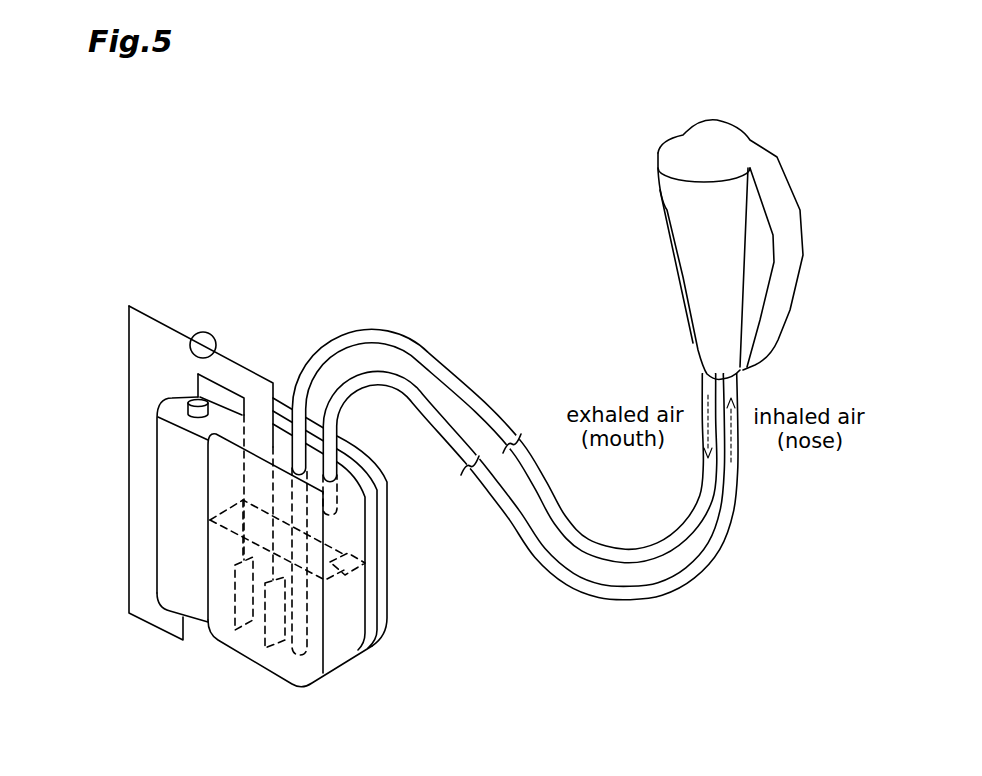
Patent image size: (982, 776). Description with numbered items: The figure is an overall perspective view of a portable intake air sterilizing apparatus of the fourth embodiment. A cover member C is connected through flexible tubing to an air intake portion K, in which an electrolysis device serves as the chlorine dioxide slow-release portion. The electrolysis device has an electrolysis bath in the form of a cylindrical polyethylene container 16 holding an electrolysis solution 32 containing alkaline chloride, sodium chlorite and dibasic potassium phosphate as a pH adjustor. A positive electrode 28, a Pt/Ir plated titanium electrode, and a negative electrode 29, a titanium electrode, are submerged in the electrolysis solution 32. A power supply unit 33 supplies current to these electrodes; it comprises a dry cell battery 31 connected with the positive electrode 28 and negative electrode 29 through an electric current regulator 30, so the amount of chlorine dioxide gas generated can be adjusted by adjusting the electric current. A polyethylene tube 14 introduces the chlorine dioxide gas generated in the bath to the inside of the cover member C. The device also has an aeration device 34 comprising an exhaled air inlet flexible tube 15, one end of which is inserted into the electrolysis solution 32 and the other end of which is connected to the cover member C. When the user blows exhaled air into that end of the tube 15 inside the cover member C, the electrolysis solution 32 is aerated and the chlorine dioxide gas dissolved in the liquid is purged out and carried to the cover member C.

The polyethylene tube 14 is at (666, 582).
The exhaled air inlet flexible tube 15 is at (447, 372).
The cylindrical polyethylene container 16 is at (337, 643).
The positive electrode 28 is at (243, 613).
The negative electrode 29 is at (278, 642).
The electric current regulator 30 is at (204, 331).
The dry cell battery 31 is at (177, 412).
The electrolysis solution 32 is at (352, 562).
The power supply unit 33 is at (127, 520).
The aeration device 34 is at (513, 428).
The cover member C is at (693, 230).
The air intake portion K is at (349, 520).